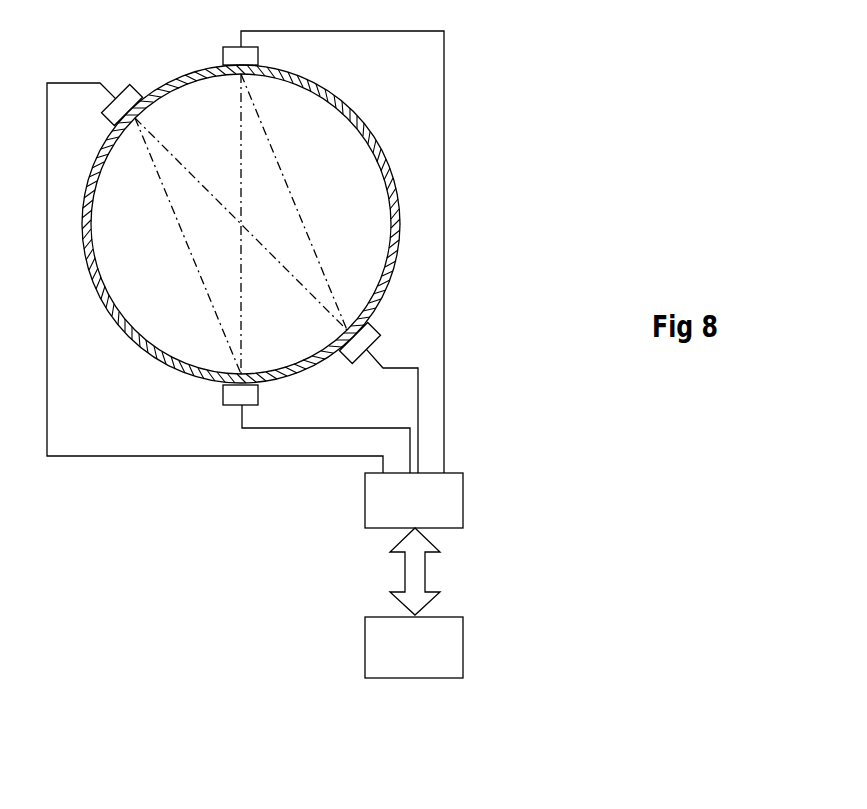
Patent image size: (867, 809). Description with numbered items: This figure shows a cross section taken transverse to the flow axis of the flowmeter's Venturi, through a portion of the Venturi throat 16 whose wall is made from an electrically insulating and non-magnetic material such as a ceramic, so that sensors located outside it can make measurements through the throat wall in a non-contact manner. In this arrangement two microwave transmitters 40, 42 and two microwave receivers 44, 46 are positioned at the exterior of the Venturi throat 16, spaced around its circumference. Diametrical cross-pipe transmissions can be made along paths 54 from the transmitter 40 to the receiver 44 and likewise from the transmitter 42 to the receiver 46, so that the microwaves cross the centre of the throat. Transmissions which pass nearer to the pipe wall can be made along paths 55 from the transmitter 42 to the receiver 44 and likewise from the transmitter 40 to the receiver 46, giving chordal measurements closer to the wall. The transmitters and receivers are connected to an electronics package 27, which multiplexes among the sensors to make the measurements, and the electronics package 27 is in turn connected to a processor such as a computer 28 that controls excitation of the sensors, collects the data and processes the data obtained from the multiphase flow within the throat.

The Venturi throat 16 is at (95, 154).
The microwave transmitter 40 is at (224, 52).
The microwave transmitter 42 is at (126, 95).
The microwave receiver 44 is at (231, 405).
The microwave receiver 46 is at (365, 333).
The diametrical transmission paths 54 is at (312, 298).
The near-wall transmission paths 55 is at (196, 267).
The electronics package 27 is at (450, 507).
The computer 28 is at (452, 657).